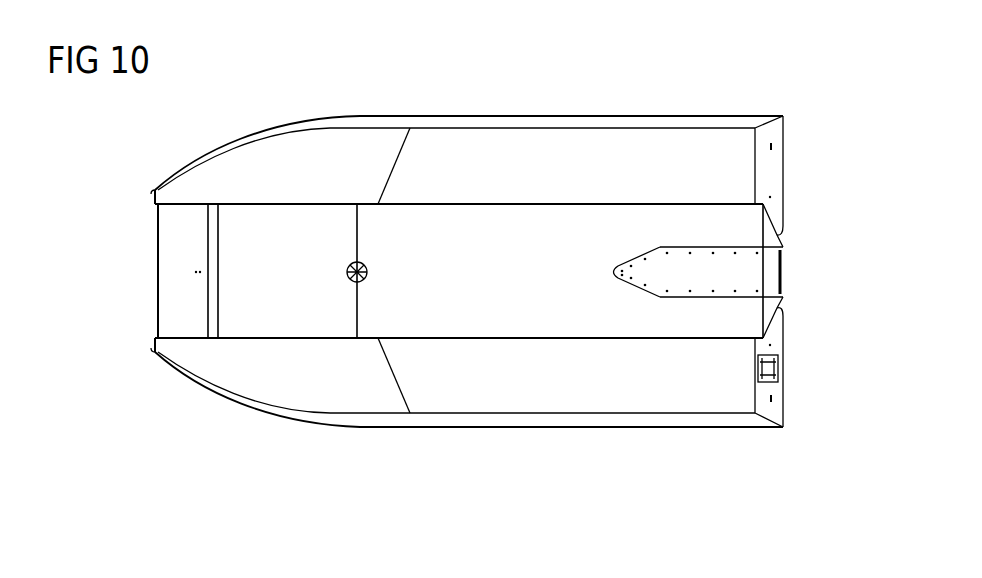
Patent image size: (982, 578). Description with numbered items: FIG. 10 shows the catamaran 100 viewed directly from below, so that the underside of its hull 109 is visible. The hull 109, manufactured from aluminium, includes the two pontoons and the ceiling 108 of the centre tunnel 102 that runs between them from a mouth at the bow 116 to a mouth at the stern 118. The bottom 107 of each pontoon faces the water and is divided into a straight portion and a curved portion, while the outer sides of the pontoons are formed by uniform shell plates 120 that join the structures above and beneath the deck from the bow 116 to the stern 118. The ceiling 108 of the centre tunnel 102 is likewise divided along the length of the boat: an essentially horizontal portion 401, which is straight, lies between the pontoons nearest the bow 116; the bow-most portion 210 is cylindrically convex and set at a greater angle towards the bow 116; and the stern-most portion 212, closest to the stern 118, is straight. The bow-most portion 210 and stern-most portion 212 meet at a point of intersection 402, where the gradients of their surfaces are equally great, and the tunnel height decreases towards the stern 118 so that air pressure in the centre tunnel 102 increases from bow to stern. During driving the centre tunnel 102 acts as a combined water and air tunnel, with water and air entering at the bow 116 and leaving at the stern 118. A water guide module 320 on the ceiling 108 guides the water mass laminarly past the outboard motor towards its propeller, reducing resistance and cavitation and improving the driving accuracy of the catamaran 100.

The catamaran 100 is at (459, 522).
The centre tunnel 102 is at (133, 314).
The bottom of the pontoons 107 is at (303, 157).
The ceiling of the centre tunnel 108 is at (386, 271).
The hull 109 is at (392, 456).
The bow 116 is at (145, 262).
The stern 118 is at (790, 283).
The shell plates 120 is at (603, 118).
The bow-most portion 210 is at (297, 293).
The stern-most portion 212 is at (472, 270).
The water guide module 320 is at (765, 270).
The essentially horizontal portion 401 is at (177, 232).
The point of intersection 402 is at (347, 271).